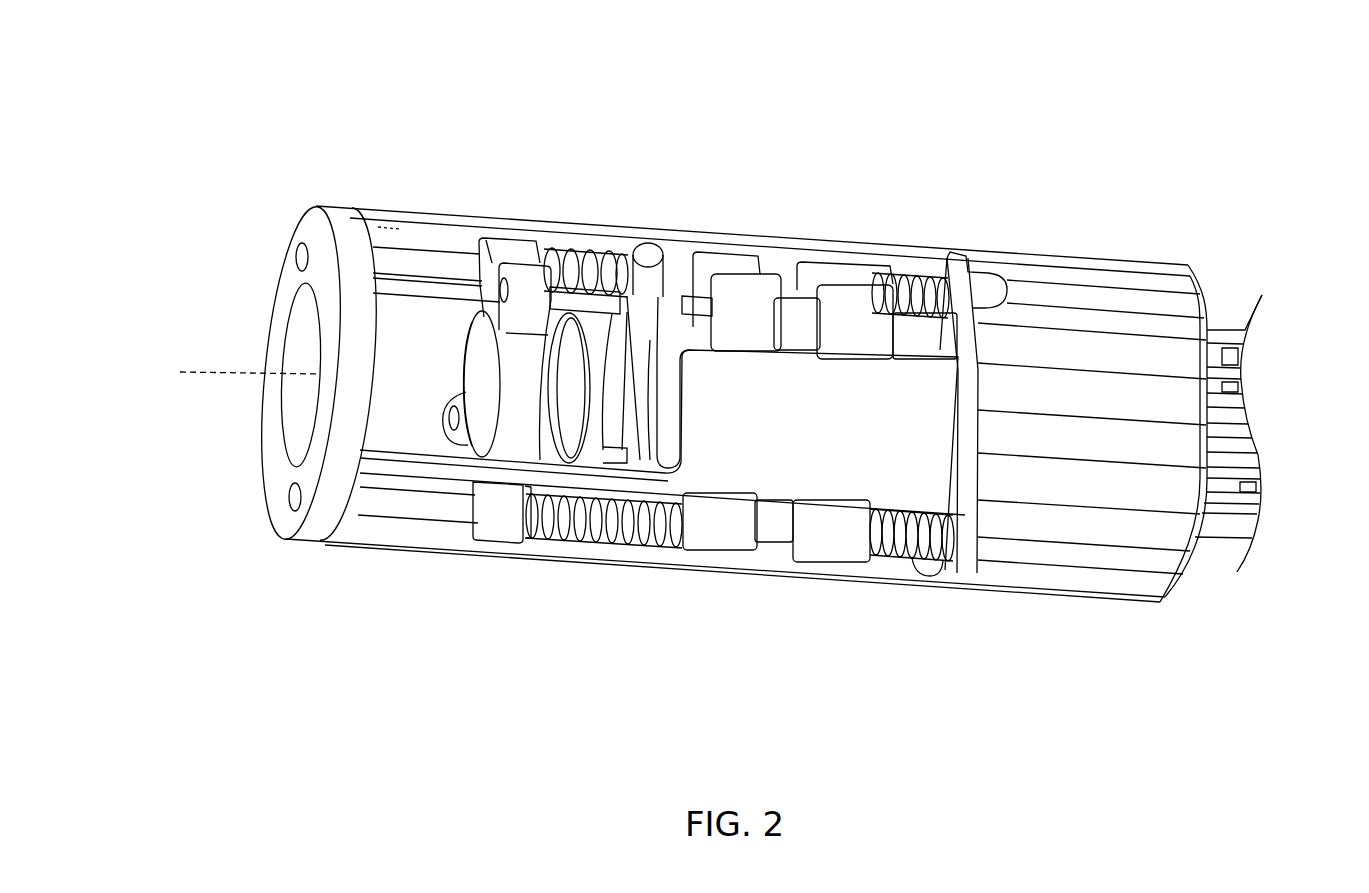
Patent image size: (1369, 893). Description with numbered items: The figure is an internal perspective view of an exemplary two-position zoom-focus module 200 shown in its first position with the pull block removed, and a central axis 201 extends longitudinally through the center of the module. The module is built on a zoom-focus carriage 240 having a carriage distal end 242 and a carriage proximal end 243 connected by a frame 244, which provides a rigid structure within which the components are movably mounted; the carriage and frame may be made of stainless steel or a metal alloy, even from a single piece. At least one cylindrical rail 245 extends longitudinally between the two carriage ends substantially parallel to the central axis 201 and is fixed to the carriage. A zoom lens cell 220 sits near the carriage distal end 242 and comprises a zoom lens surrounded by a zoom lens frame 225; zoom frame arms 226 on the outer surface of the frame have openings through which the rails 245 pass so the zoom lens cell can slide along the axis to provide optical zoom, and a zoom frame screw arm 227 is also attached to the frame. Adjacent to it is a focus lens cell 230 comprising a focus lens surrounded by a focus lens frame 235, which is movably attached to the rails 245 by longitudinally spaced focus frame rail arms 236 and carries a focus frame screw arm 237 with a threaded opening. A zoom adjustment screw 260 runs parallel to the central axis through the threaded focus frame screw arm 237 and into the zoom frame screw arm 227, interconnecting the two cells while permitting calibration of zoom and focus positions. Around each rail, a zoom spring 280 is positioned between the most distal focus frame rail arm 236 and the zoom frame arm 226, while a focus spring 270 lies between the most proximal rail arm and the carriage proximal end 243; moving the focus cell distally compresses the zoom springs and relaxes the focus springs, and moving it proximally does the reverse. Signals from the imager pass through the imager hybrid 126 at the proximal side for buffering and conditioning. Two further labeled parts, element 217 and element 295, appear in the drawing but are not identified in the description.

The zoom-focus module 200 is at (1082, 72).
The imager hybrid 126 is at (1232, 322).
The central axis 201 is at (205, 372).
The pin 217 is at (637, 240).
The zoom lens cell 220 is at (540, 250).
The zoom lens frame 225 is at (513, 370).
The zoom frame arm 226 is at (515, 542).
The zoom frame screw arm 227 is at (487, 243).
The focus lens cell 230 is at (658, 476).
The focus lens frame 235 is at (700, 330).
The focus frame rail arm 236 is at (745, 300).
The focus frame screw arm 237 is at (795, 300).
The zoom-focus carriage 240 is at (260, 504).
The carriage distal end 242 is at (308, 209).
The carriage proximal end 243 is at (985, 280).
The frame 244 is at (368, 475).
The rail 245 is at (390, 245).
The zoom adjustment screw 260 is at (619, 300).
The focus spring 270 is at (915, 285).
The zoom spring 280 is at (598, 300).
The lever 295 is at (678, 335).